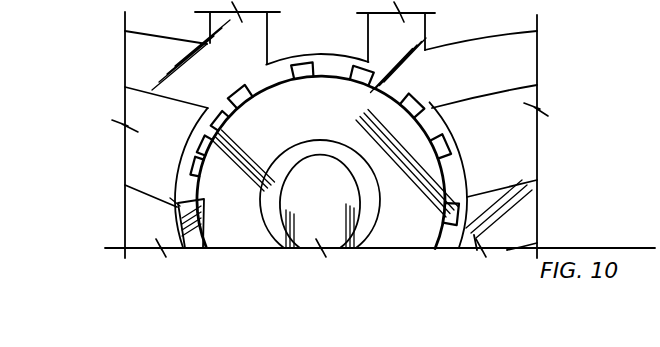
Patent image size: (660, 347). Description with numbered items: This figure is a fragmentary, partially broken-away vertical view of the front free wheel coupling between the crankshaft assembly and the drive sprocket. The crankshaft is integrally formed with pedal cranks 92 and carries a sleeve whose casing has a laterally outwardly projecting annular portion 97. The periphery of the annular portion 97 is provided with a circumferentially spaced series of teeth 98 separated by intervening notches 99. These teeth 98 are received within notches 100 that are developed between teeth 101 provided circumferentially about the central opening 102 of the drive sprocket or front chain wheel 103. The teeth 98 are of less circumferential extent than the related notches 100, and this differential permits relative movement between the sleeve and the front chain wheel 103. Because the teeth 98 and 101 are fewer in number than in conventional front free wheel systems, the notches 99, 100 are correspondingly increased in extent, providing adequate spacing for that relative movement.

The pedal crank 92 is at (362, 198).
The annular portion 97 is at (436, 150).
The teeth 98 is at (194, 173).
The notches 99 is at (178, 192).
The notches 100 is at (225, 84).
The teeth 101 is at (208, 122).
The central opening 102 is at (200, 149).
The front chain wheel 103 is at (527, 53).